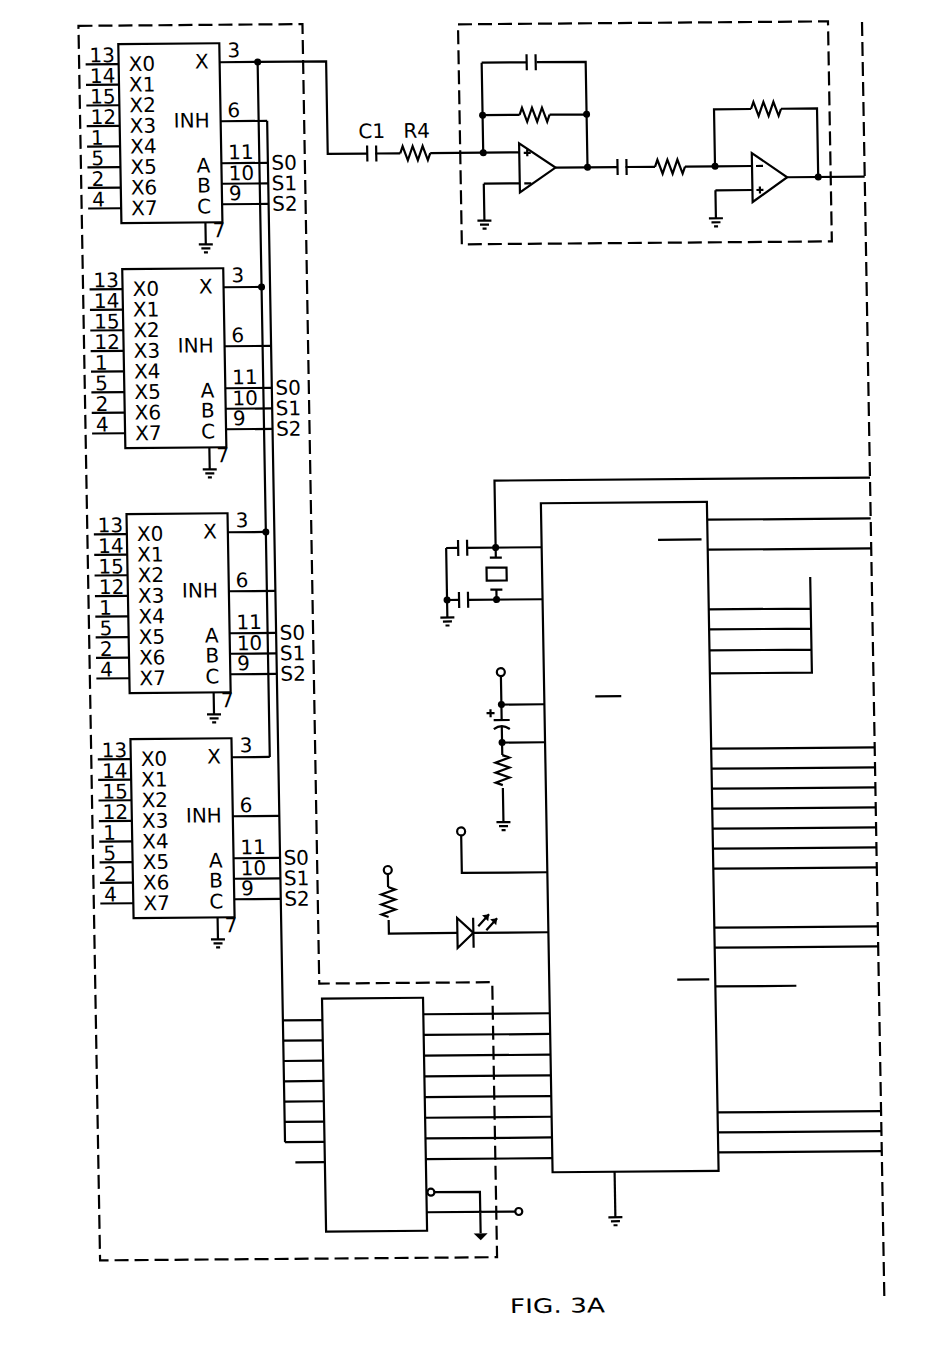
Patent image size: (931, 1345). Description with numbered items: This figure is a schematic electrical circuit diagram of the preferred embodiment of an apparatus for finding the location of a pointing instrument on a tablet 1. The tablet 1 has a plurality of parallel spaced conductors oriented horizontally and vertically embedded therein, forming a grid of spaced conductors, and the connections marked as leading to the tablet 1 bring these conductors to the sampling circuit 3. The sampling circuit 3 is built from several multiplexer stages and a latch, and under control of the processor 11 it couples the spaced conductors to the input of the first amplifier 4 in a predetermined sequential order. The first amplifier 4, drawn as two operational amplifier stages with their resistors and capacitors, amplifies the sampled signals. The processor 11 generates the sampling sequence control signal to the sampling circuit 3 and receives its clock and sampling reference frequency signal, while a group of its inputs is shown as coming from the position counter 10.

The tablet 1 is at (70, 500).
The sampling circuit 3 is at (283, 514).
The first amplifier 4 is at (682, 232).
The position counter 10 is at (789, 616).
The processor 11 is at (621, 814).